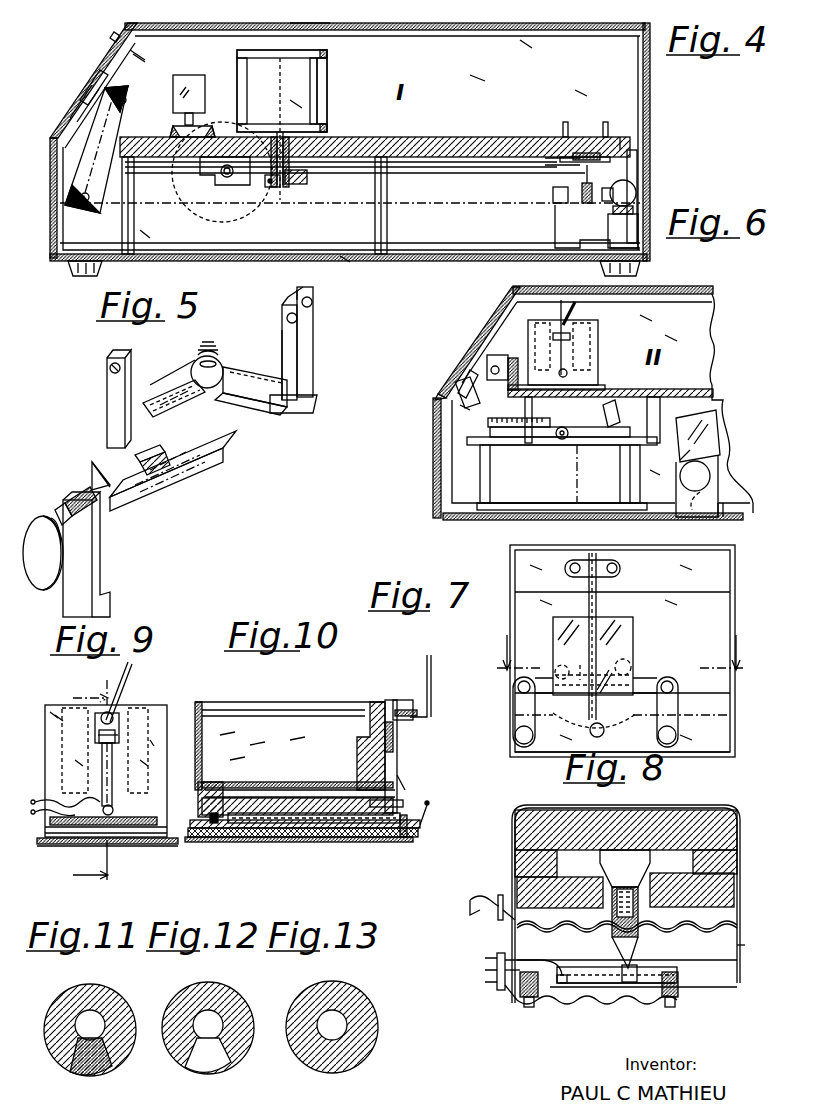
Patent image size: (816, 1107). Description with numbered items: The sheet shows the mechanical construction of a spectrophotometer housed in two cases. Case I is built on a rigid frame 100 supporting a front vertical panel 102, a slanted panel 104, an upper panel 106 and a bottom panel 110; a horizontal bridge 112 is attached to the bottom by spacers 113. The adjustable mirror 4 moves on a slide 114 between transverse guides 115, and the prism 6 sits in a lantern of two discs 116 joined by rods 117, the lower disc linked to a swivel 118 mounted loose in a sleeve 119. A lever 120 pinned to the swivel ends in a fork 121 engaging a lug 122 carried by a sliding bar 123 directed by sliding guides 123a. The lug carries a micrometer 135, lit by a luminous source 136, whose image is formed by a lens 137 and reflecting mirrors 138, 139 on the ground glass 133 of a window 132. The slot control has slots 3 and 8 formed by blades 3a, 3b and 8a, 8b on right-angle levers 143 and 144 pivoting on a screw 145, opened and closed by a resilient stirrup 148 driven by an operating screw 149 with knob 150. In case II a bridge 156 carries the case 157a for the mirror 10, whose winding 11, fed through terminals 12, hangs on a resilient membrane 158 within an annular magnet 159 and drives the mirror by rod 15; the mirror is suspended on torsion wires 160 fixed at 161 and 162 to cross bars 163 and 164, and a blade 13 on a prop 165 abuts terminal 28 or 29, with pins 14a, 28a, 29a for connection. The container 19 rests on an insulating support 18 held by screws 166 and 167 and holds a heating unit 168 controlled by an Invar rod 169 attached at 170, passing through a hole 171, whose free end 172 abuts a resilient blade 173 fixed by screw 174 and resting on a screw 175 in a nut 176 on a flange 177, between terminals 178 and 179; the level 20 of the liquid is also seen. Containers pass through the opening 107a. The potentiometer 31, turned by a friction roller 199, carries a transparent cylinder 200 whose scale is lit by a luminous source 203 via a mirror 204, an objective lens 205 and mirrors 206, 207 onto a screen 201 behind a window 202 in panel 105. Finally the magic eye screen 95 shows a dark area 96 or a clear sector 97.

In FIG. 4, the rigid frame 100 is at (205, 20).
In FIG. 4, the upper panel 106 is at (290, 20).
In FIG. 4, the slanted panel 104 is at (115, 35).
In FIG. 4, the front vertical panel 102 is at (55, 175).
In FIG. 6, the opening 107a is at (535, 290).
In FIG. 4, the ground glass 133 is at (95, 70).
In FIG. 4, the window 132 is at (88, 90).
In FIG. 4, the reflecting mirror 138 is at (100, 178).
In FIG. 4, the reflecting mirror 139 is at (120, 92).
In FIG. 4, the horizontal bridge 112 is at (400, 137).
In FIG. 4, the spacers 113 is at (134, 219).
In FIG. 4, the lever 120 is at (407, 175).
In FIG. 4, the prism 6 is at (300, 72).
In FIG. 4, the discs 116 is at (315, 52).
In FIG. 4, the rods 117 is at (326, 100).
In FIG. 4, the mirror 10 is at (273, 84).
In FIG. 7, the mirror 10 is at (632, 640).
In FIG. 8, the mirror 10 is at (610, 988).
In FIG. 9, the mirror 10 is at (93, 776).
In FIG. 4, the swivel 118 is at (285, 178).
In FIG. 4, the sleeve 119 is at (315, 160).
In FIG. 4, the slide 114 is at (182, 150).
In FIG. 4, the adjustable mirror 4 is at (195, 76).
In FIG. 4, the transverse guides 115 is at (175, 126).
In FIG. 4, the sliding bar 123 is at (585, 149).
In FIG. 4, the sliding guides 123a is at (562, 137).
In FIG. 4, the fork 121 is at (618, 148).
In FIG. 4, the lug 122 is at (570, 168).
In FIG. 4, the micrometer 135 is at (585, 203).
In FIG. 4, the lens 137 is at (553, 197).
In FIG. 4, the luminous source 136 is at (613, 178).
In FIG. 4, the bottom panel 110 is at (339, 258).
In FIG. 6, the screen 201 is at (490, 335).
In FIG. 6, the window 202 is at (468, 352).
In FIG. 6, the slanted panel 105 is at (455, 390).
In FIG. 6, the bridge 156 is at (700, 393).
In FIG. 9, the bridge 156 is at (124, 846).
In FIG. 10, the bridge 156 is at (316, 838).
In FIG. 6, the reflecting mirror 207 is at (498, 355).
In FIG. 6, the reflecting mirror 206 is at (478, 392).
In FIG. 6, the transparent cylinder 200 is at (487, 423).
In FIG. 6, the objective lens 205 is at (605, 415).
In FIG. 6, the friction roller 199 is at (562, 440).
In FIG. 6, the potentiometer 31 is at (490, 476).
In FIG. 6, the mirror 204 is at (713, 415).
In FIG. 6, the luminous source 203 is at (697, 486).
In FIG. 7, the cross bar 164 is at (690, 740).
In FIG. 8, the cross bar 164 is at (727, 975).
In FIG. 7, the cross bar 163 is at (675, 580).
In FIG. 7, the attachment point 161 is at (605, 565).
In FIG. 7, the strands of wire 160 is at (598, 600).
In FIG. 8, the strands of wire 160 is at (597, 985).
In FIG. 7, the prop 165 is at (583, 670).
In FIG. 8, the prop 165 is at (585, 975).
In FIG. 7, the case 157a is at (735, 692).
In FIG. 8, the case 157a is at (745, 945).
In FIG. 7, the attachment point 162 is at (604, 727).
In FIG. 7, the adjustable slot 8 is at (621, 652).
In FIG. 5, the adjustable slot 8 is at (300, 336).
In FIG. 8, the permanent annular magnet 159 is at (680, 886).
In FIG. 8, the winding 11 is at (637, 935).
In FIG. 8, the resilient membrane 158 is at (720, 928).
In FIG. 8, the terminals 12 is at (492, 900).
In FIG. 8, the rod 15 is at (625, 963).
In FIG. 8, the blade 13 is at (660, 972).
In FIG. 8, the terminal 29 is at (535, 1005).
In FIG. 8, the terminal 28 is at (680, 1003).
In FIG. 8, the pin 28a is at (484, 969).
In FIG. 8, the pin 29a is at (510, 1002).
In FIG. 8, the pin 14a is at (490, 980).
In FIG. 9, the container 19 is at (50, 737).
In FIG. 10, the container 19 is at (195, 746).
In FIG. 9, the screw 175 is at (130, 665).
In FIG. 10, the screw 175 is at (405, 708).
In FIG. 9, the flange 177 is at (118, 718).
In FIG. 10, the flange 177 is at (390, 702).
In FIG. 9, the nut 176 is at (120, 734).
In FIG. 10, the nut 176 is at (428, 668).
In FIG. 9, the resilient blade 173 is at (112, 775).
In FIG. 10, the resilient blade 173 is at (395, 740).
In FIG. 9, the terminal 179 is at (38, 802).
In FIG. 10, the terminal 179 is at (415, 794).
In FIG. 9, the terminal 178 is at (50, 833).
In FIG. 10, the terminal 178 is at (433, 818).
In FIG. 9, the support 18 is at (60, 844).
In FIG. 10, the support 18 is at (280, 842).
In FIG. 10, the tank 20 is at (260, 715).
In FIG. 10, the free end 172 is at (394, 772).
In FIG. 10, the screw 174 is at (380, 803).
In FIG. 10, the rod of Invar metal 169 is at (335, 790).
In FIG. 10, the hole 171 is at (265, 790).
In FIG. 10, the attachment point 170 is at (215, 790).
In FIG. 10, the electrical heating unit 168 is at (362, 842).
In FIG. 10, the screws 167 is at (212, 840).
In FIG. 10, the screws 166 is at (404, 838).
In FIG. 5, the adjustable slot 3 is at (128, 483).
In FIG. 5, the blade 3b is at (150, 460).
In FIG. 5, the blade 3a is at (107, 395).
In FIG. 5, the right-angle lever 144 is at (195, 410).
In FIG. 5, the screw 145 is at (210, 353).
In FIG. 5, the right-angle lever 143 is at (258, 400).
In FIG. 5, the blade 8a is at (285, 345).
In FIG. 5, the blade 8b is at (313, 300).
In FIG. 5, the resilient stirrup 148 is at (92, 467).
In FIG. 5, the operating screw 149 is at (97, 510).
In FIG. 5, the operating knob 150 is at (46, 576).
In FIG. 11, the screen 95 is at (110, 1000).
In FIG. 12, the screen 95 is at (223, 998).
In FIG. 11, the dark area 96 is at (80, 1076).
In FIG. 12, the clear sector 97 is at (216, 1065).